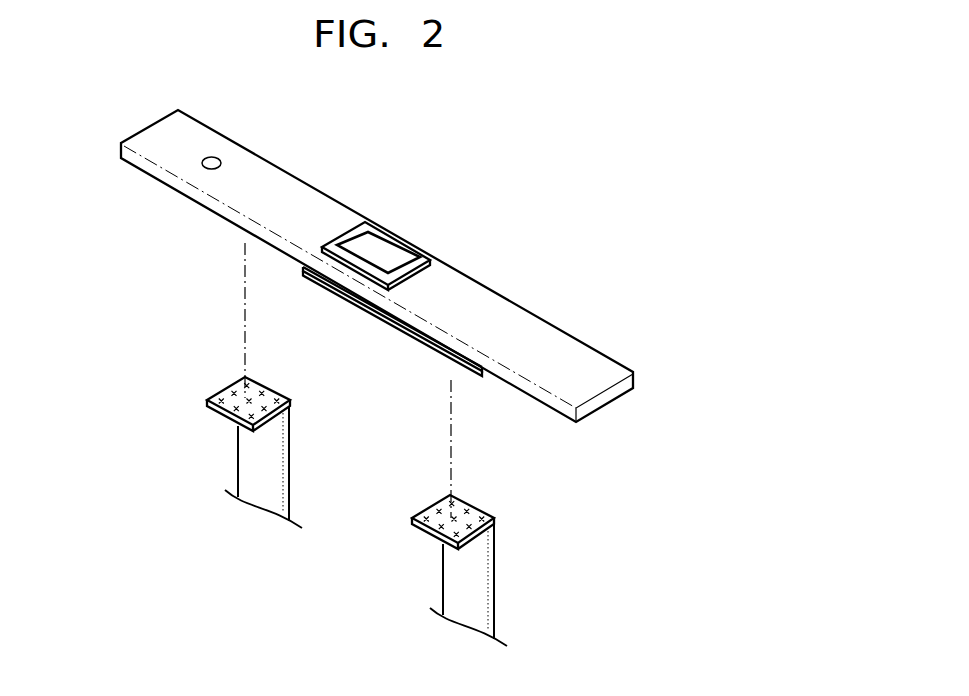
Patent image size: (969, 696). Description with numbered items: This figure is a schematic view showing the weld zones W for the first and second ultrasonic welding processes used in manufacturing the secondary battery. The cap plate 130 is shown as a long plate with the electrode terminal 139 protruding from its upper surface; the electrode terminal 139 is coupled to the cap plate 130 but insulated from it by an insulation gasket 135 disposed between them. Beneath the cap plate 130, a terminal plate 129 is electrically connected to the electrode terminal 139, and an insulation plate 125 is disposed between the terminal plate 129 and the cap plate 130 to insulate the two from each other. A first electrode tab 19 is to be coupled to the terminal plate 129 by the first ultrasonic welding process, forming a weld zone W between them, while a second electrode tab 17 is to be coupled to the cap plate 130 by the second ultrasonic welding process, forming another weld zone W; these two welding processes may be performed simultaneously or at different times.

The cap plate 130 is at (573, 347).
The insulation gasket 135 is at (430, 258).
The electrode terminal 139 is at (378, 239).
The insulation plate 125 is at (358, 298).
The terminal plate 129 is at (408, 334).
The second electrode tab 17 is at (275, 458).
The first electrode tab 19 is at (482, 579).
The weld zone W is at (243, 403).